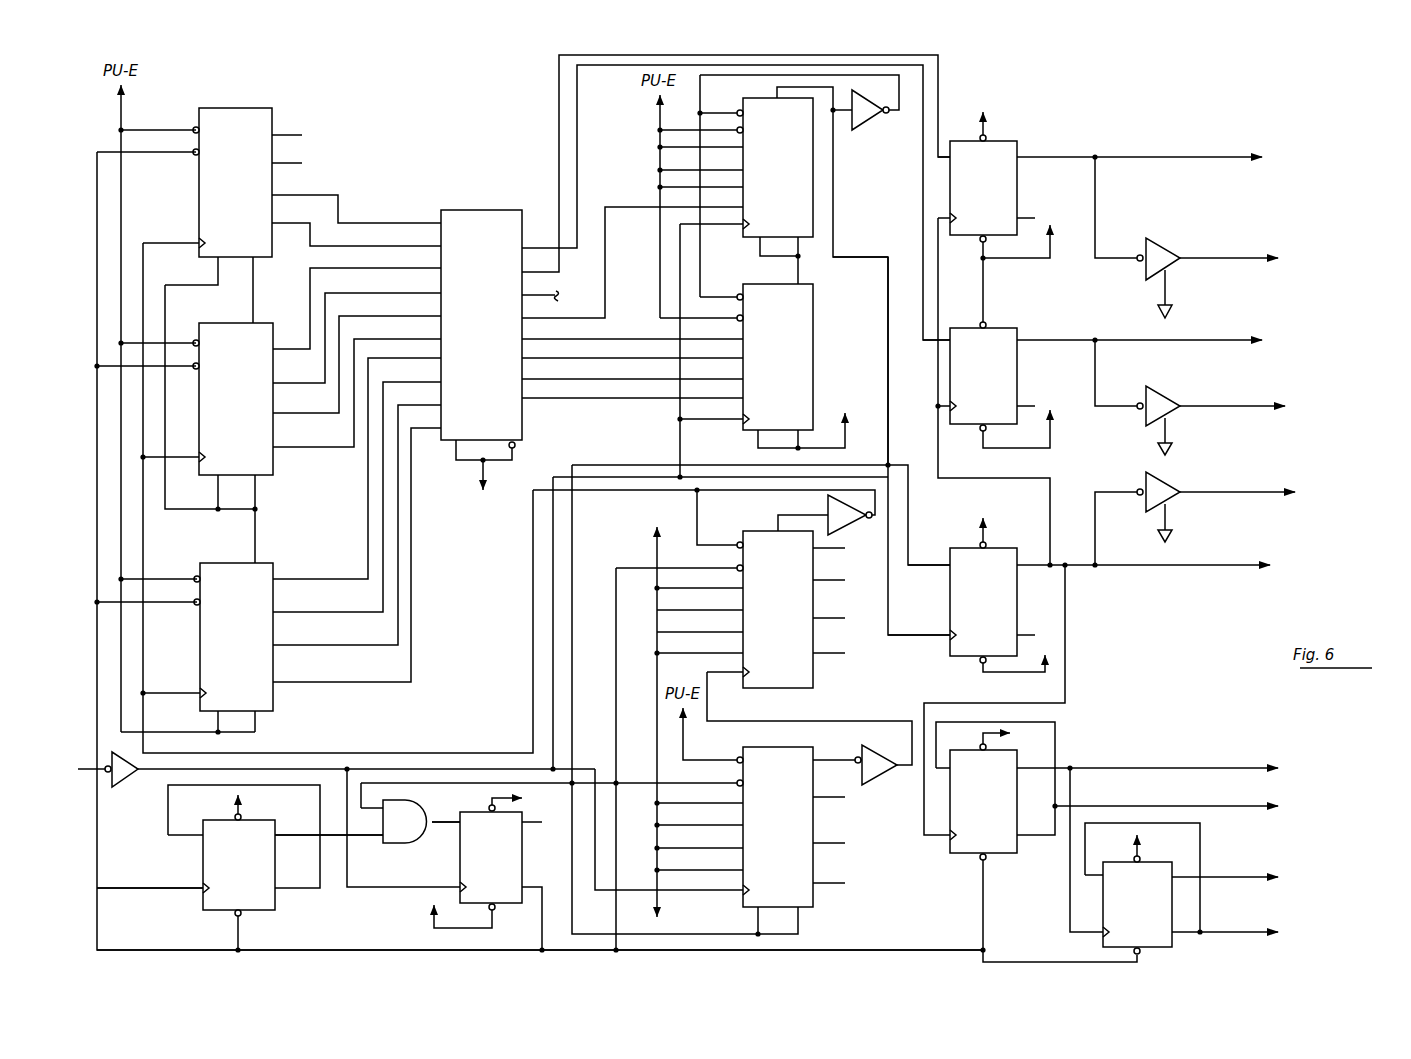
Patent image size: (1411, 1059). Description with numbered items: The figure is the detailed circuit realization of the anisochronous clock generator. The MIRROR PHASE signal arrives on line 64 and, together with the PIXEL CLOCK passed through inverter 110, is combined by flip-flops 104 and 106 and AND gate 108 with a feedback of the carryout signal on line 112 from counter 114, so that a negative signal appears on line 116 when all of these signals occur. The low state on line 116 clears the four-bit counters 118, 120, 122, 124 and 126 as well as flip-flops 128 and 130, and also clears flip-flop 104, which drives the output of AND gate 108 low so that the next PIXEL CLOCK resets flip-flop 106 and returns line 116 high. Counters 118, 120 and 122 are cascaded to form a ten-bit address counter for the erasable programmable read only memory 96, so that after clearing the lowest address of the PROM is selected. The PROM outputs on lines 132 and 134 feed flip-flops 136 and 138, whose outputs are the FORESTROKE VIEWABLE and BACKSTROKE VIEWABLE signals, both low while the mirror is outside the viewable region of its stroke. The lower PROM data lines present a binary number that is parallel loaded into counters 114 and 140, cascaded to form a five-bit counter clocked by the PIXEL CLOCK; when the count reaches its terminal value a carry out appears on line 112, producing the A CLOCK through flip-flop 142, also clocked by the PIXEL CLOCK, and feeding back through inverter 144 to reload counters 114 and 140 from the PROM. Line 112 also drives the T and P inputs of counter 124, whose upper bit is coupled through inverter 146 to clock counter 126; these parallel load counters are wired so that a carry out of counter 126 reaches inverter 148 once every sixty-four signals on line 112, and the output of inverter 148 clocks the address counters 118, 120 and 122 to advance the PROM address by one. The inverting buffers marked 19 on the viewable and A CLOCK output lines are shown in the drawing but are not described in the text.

The 4 bit counter 122 is at (272, 108).
The 4 bit counter 120 is at (273, 460).
The 4 bit counter 118 is at (273, 572).
The programmable read only memory 96 is at (505, 210).
The PROM output line 132 is at (559, 95).
The PROM output line 134 is at (577, 122).
The counter 114 is at (813, 221).
The counter 140 is at (813, 375).
The inverter 144 is at (862, 128).
The carryout line 112 is at (862, 258).
The flip-flop 136 is at (1005, 141).
The flip-flop 138 is at (1005, 328).
The inverter buffers 19 is at (1195, 361).
The flip-flop 142 is at (1010, 548).
The 4 bit counter 126 is at (770, 531).
The inverter 148 is at (862, 528).
The 4 bit counter 124 is at (813, 860).
The inverter 146 is at (875, 778).
The flip-flop 106 is at (522, 858).
The AND gate 108 is at (422, 844).
The flip-flop 104 is at (270, 912).
The line 64 is at (135, 890).
The inverter 110 is at (130, 790).
The line 116 is at (915, 948).
The flip-flop 130 is at (1002, 855).
The flip-flop 128 is at (1175, 947).